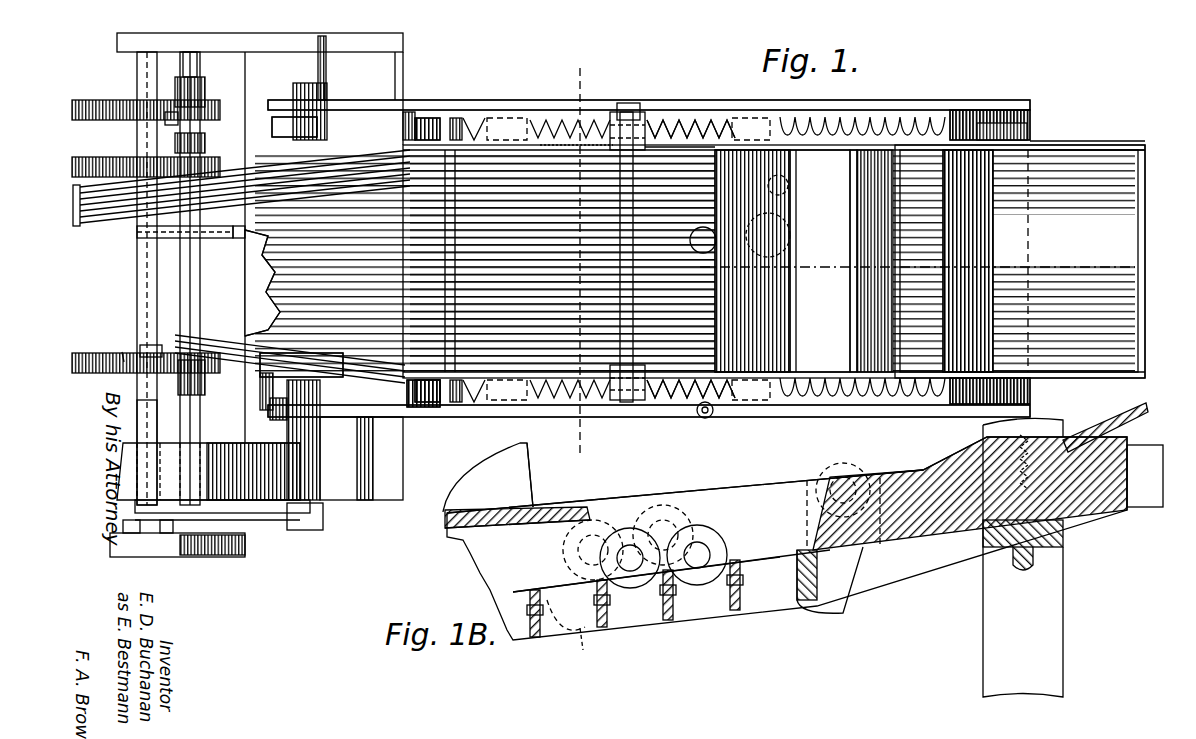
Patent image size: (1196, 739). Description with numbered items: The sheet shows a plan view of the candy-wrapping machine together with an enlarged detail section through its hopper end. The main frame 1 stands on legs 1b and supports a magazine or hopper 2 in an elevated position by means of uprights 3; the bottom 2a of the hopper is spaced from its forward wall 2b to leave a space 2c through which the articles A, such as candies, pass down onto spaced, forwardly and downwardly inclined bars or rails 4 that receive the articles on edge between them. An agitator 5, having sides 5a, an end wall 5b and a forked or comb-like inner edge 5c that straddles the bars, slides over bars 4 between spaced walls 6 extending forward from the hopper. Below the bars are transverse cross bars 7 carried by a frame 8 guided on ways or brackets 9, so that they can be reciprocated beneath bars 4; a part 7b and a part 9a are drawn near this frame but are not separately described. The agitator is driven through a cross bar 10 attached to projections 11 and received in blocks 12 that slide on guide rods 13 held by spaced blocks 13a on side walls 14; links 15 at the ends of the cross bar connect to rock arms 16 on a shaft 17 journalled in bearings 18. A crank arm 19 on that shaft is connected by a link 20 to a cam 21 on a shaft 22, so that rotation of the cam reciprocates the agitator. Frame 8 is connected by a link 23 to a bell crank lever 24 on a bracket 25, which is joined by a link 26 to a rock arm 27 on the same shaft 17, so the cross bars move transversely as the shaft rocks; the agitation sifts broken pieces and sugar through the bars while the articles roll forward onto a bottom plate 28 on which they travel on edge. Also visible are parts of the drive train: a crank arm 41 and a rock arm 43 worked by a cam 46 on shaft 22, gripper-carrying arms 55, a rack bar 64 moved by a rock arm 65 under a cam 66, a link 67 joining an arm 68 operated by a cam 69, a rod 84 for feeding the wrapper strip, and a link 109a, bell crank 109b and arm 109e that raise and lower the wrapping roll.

In FIG. 1, the main frame 1 is at (1038, 140).
In FIG. 1, the legs 1b is at (917, 266).
In FIG. 1B, the legs 1b is at (1030, 465).
In FIG. 1, the magazine or hopper 2 is at (1108, 145).
In FIG. 1, the bottom of hopper 2a is at (1064, 261).
In FIG. 1B, the bottom of hopper 2a is at (1105, 425).
In FIG. 1, the forward wall of hopper 2b is at (920, 392).
In FIG. 1, the space 2c is at (925, 170).
In FIG. 1B, the uprights 3 is at (1073, 566).
In FIG. 1, the bars or rails 4 is at (665, 150).
In FIG. 1, the agitator 5 is at (782, 261).
In FIG. 1B, the agitator 5 is at (535, 475).
In FIG. 1, the sides of agitator 5a is at (845, 150).
In FIG. 1B, the sides of agitator 5a is at (488, 477).
In FIG. 1B, the end wall of agitator 5b is at (485, 528).
In FIG. 1, the comb parts 5c is at (870, 150).
In FIG. 1B, the comb parts 5c is at (570, 512).
In FIG. 1, the spaced walls 6 is at (1060, 144).
In FIG. 1, the cross bars 7 is at (843, 392).
In FIG. 1B, the cross bars 7 is at (727, 612).
In FIG. 1B, the clamp ring 7b is at (1066, 535).
In FIG. 1, the frame 8 is at (867, 427).
In FIG. 1B, the frame 8 is at (768, 592).
In FIG. 1B, the ways or brackets 9 is at (607, 598).
In FIG. 1B, the lug 9a is at (850, 568).
In FIG. 1, the cross bar 10 is at (645, 402).
In FIG. 1, the projections 11 is at (685, 140).
In FIG. 1, the blocks 12 is at (640, 118).
In FIG. 1, the guide rods 13 is at (705, 138).
In FIG. 1, the spaced blocks 13a is at (510, 128).
In FIG. 1, the side walls 14 is at (585, 130).
In FIG. 1, the links 15 is at (475, 110).
In FIG. 1, the rock arms 16 is at (290, 110).
In FIG. 1, the shaft 17 is at (305, 475).
In FIG. 1, the bearings 18 is at (275, 128).
In FIG. 1, the crank arm 19 is at (272, 522).
In FIG. 1, the link 20 is at (167, 527).
In FIG. 1, the cam 21 is at (232, 557).
In FIG. 1, the shaft 22 is at (143, 426).
In FIG. 1, the link 23 is at (705, 420).
In FIG. 1, the bell crank lever 24 is at (792, 218).
In FIG. 1, the bracket 25 is at (782, 270).
In FIG. 1, the link 26 is at (447, 125).
In FIG. 1, the rock arm 27 is at (392, 98).
In FIG. 1, the bottom plate 28 is at (393, 355).
In FIG. 1B, the crank arm 41 is at (787, 505).
In FIG. 1, the rock arm 43 is at (205, 382).
In FIG. 1, the cam 46 is at (146, 354).
In FIG. 1, the arms 55 is at (718, 325).
In FIG. 1, the bar 64 is at (175, 80).
In FIG. 1, the rock arm 65 is at (205, 70).
In FIG. 1, the cam 66 is at (108, 100).
In FIG. 1, the link 67 is at (205, 140).
In FIG. 1, the arm 68 is at (165, 118).
In FIG. 1, the cam 69 is at (82, 156).
In FIG. 1, the rod 84 is at (152, 352).
In FIG. 1, the link 109a is at (137, 235).
In FIG. 1, the bell crank 109b is at (269, 283).
In FIG. 1, the arm 109e is at (240, 226).
In FIG. 1B, the articles A is at (722, 553).